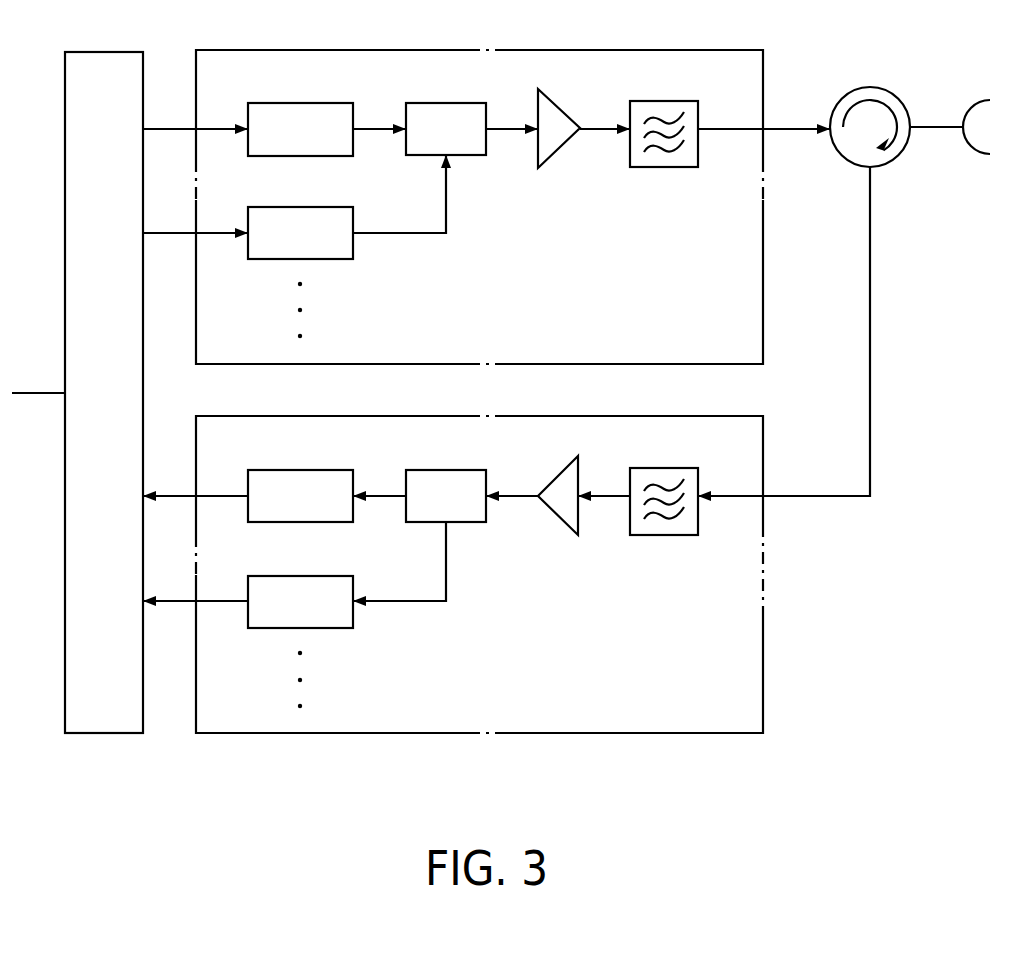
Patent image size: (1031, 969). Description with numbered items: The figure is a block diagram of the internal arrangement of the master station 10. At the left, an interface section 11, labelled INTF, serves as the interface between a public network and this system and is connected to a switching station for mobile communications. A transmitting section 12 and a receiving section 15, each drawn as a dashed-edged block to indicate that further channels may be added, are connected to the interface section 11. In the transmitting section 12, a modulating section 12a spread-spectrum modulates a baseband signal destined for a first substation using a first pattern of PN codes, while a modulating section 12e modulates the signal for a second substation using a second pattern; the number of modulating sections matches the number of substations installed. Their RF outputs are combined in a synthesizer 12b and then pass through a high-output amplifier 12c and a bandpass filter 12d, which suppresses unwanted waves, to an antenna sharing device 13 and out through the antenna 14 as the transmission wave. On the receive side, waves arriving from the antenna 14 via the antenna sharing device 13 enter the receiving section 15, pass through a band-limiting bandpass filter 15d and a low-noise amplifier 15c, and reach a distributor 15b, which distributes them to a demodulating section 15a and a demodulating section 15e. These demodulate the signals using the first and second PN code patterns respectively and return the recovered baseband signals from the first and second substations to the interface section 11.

The master station 10 is at (1017, 573).
The interface section 11 is at (125, 52).
The transmitting section 12 is at (680, 50).
The modulating section 12a is at (308, 103).
The synthesizer 12b is at (443, 103).
The high-output amplifier 12c is at (560, 108).
The bandpass filter 12d is at (663, 101).
The modulating section 12e is at (308, 207).
The antenna sharing device 13 is at (870, 87).
The antenna 14 is at (973, 148).
The receiving section 15 is at (680, 416).
The demodulating section 15a is at (308, 470).
The distributor 15b is at (443, 470).
The low-noise amplifier 15c is at (555, 513).
The bandpass filter 15d is at (663, 468).
The demodulating section 15e is at (308, 576).